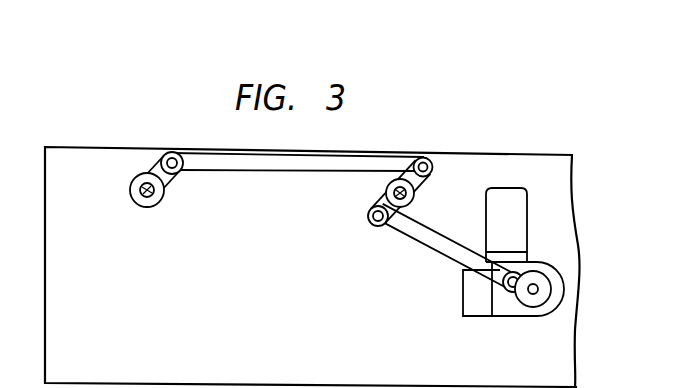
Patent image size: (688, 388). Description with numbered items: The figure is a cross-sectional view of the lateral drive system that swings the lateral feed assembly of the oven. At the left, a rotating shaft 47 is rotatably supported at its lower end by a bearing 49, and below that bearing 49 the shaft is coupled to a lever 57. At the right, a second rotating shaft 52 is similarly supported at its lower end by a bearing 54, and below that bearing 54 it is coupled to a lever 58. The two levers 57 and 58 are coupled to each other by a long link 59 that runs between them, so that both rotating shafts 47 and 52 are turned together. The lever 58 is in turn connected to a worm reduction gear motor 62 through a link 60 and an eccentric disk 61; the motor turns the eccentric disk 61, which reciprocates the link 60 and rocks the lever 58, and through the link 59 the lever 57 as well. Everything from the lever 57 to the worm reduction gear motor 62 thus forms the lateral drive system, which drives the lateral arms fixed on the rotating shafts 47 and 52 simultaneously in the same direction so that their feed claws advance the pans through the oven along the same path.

The rotating shaft 47 is at (150, 196).
The bearing 49 is at (135, 197).
The lever 57 is at (168, 180).
The link 59 is at (278, 163).
The lever 58 is at (430, 182).
The rotating shaft 52 is at (384, 193).
The bearing 54 is at (410, 202).
The link 60 is at (422, 240).
The eccentric disk 61 is at (530, 303).
The worm reduction gear motor 62 is at (522, 238).